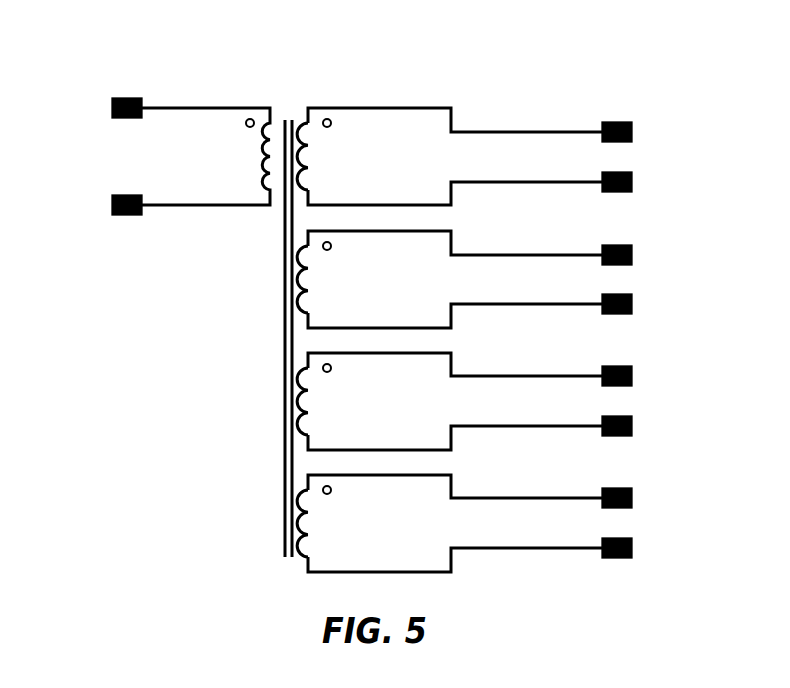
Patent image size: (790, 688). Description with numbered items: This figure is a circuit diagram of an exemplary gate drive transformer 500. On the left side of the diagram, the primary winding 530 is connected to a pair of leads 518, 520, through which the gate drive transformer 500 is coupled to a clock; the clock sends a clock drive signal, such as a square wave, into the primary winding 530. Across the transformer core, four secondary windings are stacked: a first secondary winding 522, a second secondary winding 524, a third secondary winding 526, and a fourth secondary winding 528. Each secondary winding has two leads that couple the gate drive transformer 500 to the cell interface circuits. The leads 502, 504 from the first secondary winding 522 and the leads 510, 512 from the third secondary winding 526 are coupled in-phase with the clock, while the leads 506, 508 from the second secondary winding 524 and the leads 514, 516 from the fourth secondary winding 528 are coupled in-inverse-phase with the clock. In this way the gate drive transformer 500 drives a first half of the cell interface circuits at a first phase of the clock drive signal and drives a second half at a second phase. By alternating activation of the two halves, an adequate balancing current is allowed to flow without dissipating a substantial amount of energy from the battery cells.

The gate drive transformer 500 is at (503, 66).
The lead 502 is at (632, 130).
The lead 504 is at (632, 180).
The lead 506 is at (632, 253).
The lead 508 is at (632, 302).
The lead 510 is at (632, 378).
The lead 512 is at (632, 428).
The lead 514 is at (632, 500).
The lead 516 is at (632, 550).
The lead 518 is at (112, 106).
The lead 520 is at (112, 203).
The first secondary winding 522 is at (306, 162).
The second secondary winding 524 is at (306, 285).
The third secondary winding 526 is at (306, 407).
The fourth secondary winding 528 is at (306, 529).
The primary winding 530 is at (259, 162).